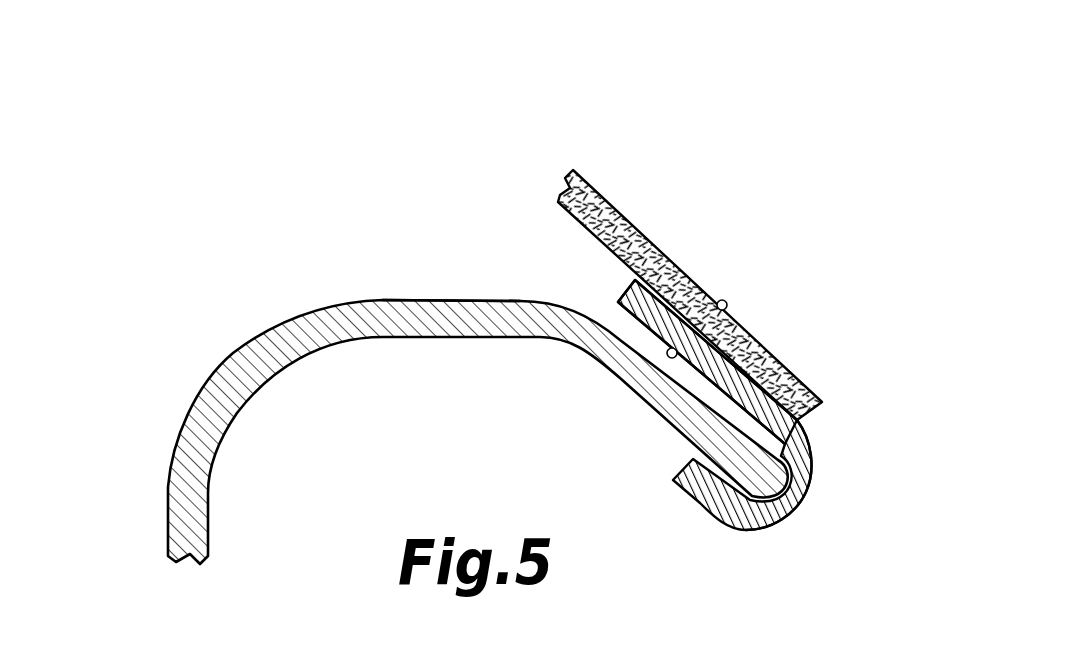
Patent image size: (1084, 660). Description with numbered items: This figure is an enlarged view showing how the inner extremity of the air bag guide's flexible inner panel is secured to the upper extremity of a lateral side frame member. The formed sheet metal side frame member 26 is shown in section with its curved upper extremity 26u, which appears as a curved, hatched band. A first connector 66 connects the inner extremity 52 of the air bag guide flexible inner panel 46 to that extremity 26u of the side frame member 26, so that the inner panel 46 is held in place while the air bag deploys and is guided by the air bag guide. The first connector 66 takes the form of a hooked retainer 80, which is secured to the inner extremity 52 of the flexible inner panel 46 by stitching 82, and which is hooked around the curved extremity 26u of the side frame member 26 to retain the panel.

The side frame member 26 is at (152, 501).
The curved extremity of side frame member 26u is at (318, 306).
The air bag guide flexible inner panel 46 is at (750, 327).
The inner extremity of flexible inner panel 52 is at (652, 240).
The first connector 66 is at (780, 416).
The hooked retainer 80 is at (795, 500).
The stitching 82 is at (750, 333).